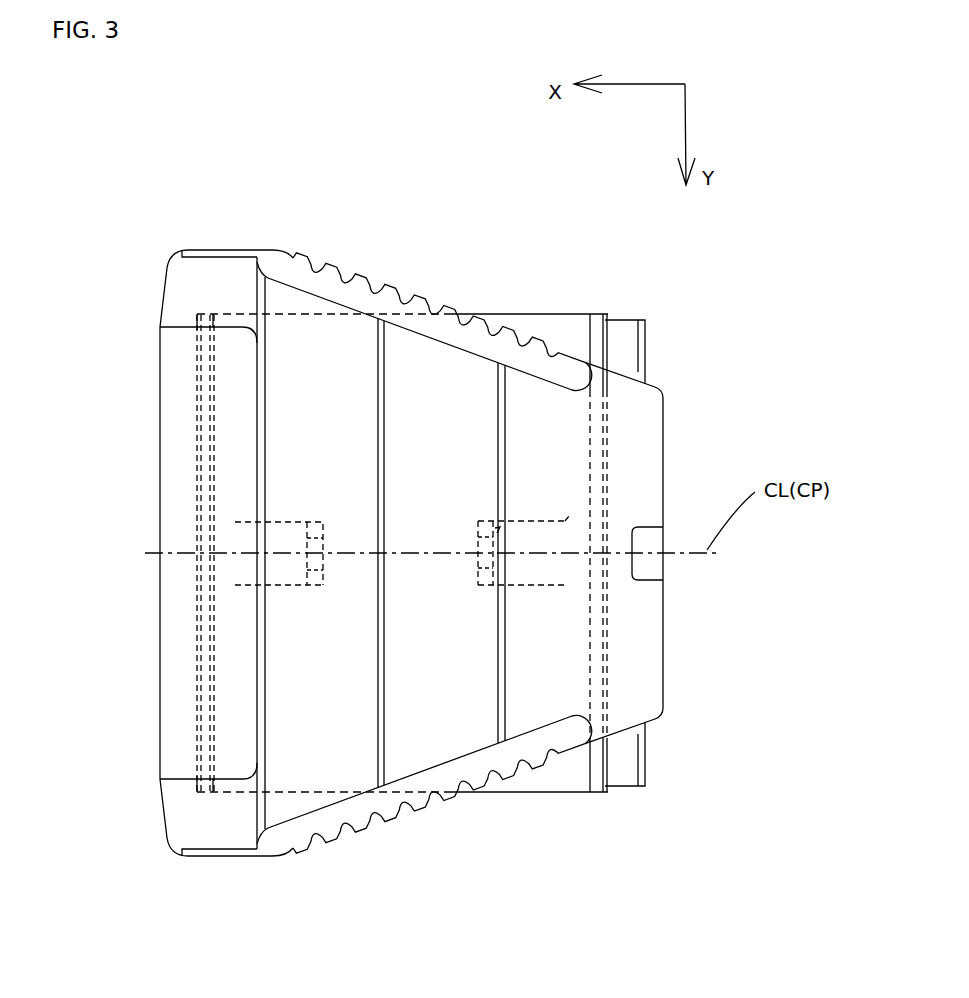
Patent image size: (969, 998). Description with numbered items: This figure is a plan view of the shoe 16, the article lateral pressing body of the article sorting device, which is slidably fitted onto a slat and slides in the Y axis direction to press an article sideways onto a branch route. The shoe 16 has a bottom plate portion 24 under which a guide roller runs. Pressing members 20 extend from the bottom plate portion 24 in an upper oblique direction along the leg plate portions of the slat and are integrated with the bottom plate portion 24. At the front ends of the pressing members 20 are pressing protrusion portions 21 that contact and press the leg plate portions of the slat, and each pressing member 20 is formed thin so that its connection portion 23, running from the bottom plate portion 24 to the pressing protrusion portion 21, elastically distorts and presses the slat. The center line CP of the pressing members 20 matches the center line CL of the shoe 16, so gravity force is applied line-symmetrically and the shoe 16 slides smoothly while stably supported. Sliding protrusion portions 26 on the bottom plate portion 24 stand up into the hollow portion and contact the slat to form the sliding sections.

The shoe 16 is at (189, 176).
The pressing member 20 is at (237, 522).
The pressing protrusion portion 21 is at (256, 516).
The connection portion 23 is at (235, 586).
The bottom plate portion 24 is at (523, 322).
The sliding protrusion portion 26 is at (207, 313).